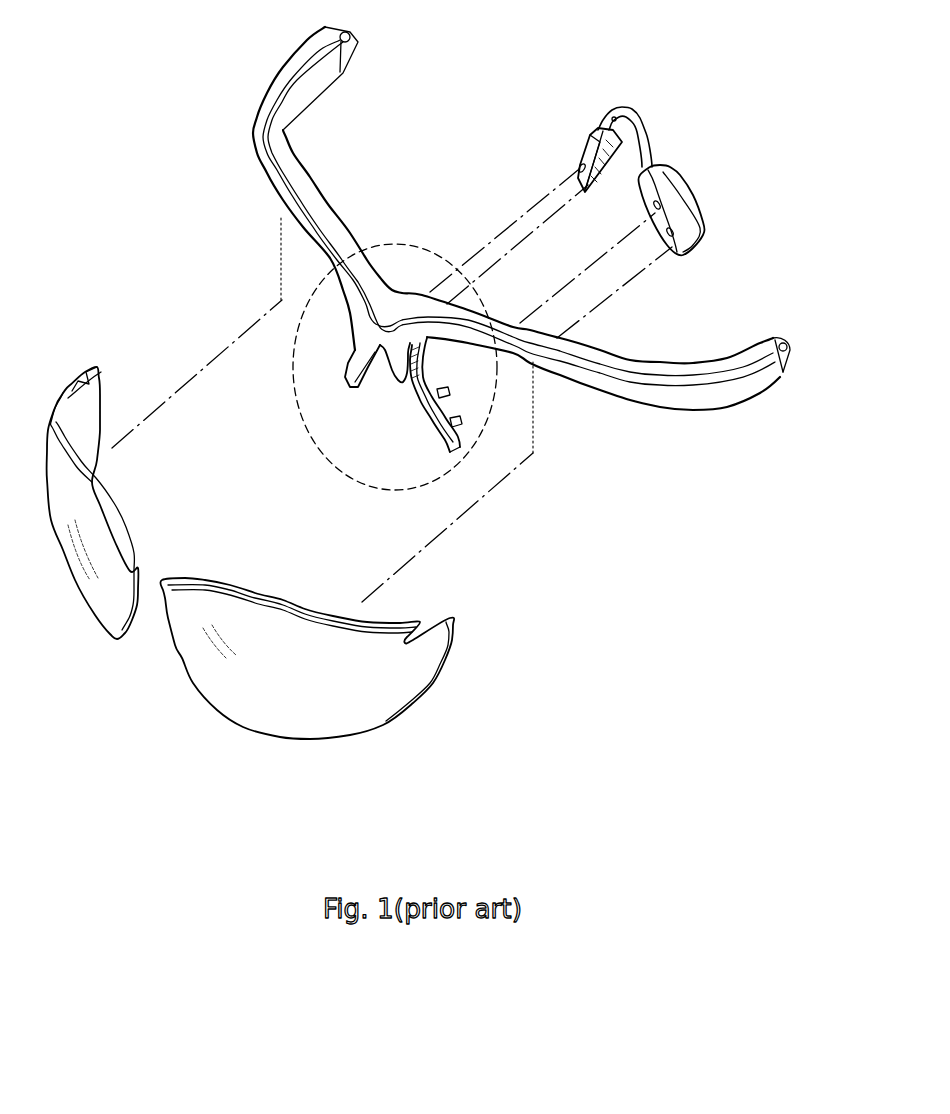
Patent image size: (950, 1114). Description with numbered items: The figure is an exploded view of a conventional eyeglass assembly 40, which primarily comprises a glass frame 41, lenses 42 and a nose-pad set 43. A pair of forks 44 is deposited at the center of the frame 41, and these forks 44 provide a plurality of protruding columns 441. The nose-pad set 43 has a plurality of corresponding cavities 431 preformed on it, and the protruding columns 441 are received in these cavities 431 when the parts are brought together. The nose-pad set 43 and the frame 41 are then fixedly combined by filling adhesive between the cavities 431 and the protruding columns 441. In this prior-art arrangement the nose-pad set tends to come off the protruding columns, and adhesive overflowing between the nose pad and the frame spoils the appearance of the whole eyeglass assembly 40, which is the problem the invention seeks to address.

The conventional eyeglass assembly 40 is at (418, 396).
The glass frame 41 is at (669, 373).
The lenses 42 is at (348, 717).
The nose-pad set 43 is at (695, 197).
The cavities 431 is at (583, 157).
The forks 44 is at (397, 243).
The protruding columns 441 is at (462, 421).